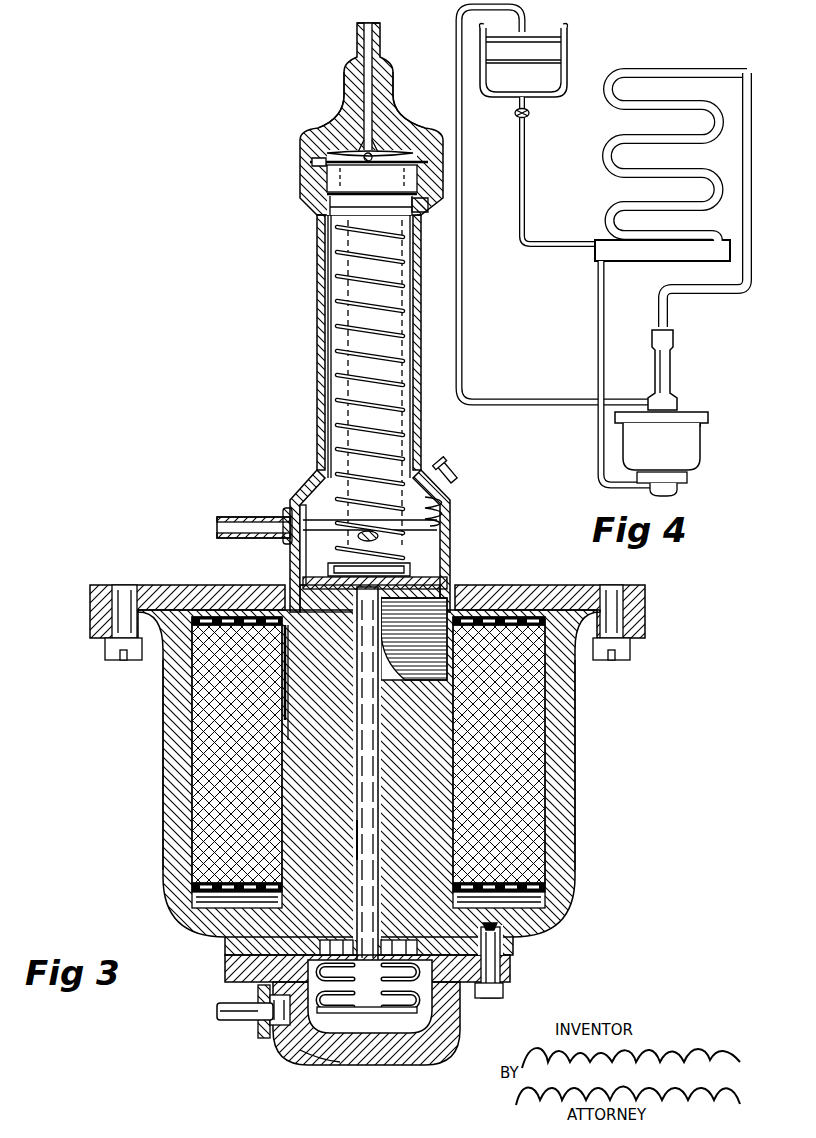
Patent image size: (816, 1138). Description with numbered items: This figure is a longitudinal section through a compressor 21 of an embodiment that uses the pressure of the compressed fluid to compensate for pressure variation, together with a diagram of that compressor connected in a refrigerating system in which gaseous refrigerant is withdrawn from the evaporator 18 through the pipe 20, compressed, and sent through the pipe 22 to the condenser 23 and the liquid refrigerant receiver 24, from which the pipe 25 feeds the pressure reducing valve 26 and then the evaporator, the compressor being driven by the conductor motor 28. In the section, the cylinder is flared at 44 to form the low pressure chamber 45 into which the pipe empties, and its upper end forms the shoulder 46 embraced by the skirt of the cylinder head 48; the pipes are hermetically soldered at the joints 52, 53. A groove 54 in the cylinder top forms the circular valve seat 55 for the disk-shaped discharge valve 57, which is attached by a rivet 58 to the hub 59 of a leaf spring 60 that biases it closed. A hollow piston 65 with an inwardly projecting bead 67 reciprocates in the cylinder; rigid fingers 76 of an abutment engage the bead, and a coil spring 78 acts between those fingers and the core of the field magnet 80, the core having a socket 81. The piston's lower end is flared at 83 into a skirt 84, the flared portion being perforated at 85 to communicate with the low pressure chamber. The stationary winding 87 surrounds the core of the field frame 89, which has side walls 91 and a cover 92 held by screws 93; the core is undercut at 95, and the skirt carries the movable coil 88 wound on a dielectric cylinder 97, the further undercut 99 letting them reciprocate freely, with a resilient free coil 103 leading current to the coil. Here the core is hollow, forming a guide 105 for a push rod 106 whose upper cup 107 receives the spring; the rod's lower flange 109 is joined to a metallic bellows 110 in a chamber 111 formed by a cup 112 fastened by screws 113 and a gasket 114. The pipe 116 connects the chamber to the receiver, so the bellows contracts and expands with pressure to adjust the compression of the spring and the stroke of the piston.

In FIG. 4, the evaporator 18 is at (567, 60).
In FIG. 3, the pipe 20 is at (217, 522).
In FIG. 4, the pipe 20 is at (462, 350).
In FIG. 3, the compressor 21 is at (318, 322).
In FIG. 4, the compressor 21 is at (722, 370).
In FIG. 3, the pipe 22 is at (381, 40).
In FIG. 4, the pipe 22 is at (705, 294).
In FIG. 4, the condenser 23 is at (603, 150).
In FIG. 4, the liquid refrigerant receiver 24 is at (652, 258).
In FIG. 4, the pipe 25 is at (524, 210).
In FIG. 4, the pressure reducing valve 26 is at (530, 113).
In FIG. 4, the conductor motor 28 is at (738, 478).
In FIG. 3, the flared portion of cylinder 44 is at (316, 470).
In FIG. 3, the low pressure chamber 45 is at (305, 205).
In FIG. 3, the shoulder 46 is at (322, 208).
In FIG. 3, the cylinder head 48 is at (430, 126).
In FIG. 3, the joint 52 is at (285, 512).
In FIG. 3, the joint 53 is at (390, 68).
In FIG. 3, the groove 54 is at (312, 163).
In FIG. 3, the valve seat 55 is at (330, 180).
In FIG. 3, the discharge valve 57 is at (315, 160).
In FIG. 3, the rivet 58 is at (372, 152).
In FIG. 3, the hub 59 is at (365, 150).
In FIG. 3, the leaf spring 60 is at (335, 153).
In FIG. 3, the piston 65 is at (325, 365).
In FIG. 3, the bead 67 is at (425, 205).
In FIG. 3, the fingers of abutment 76 is at (328, 240).
In FIG. 3, the coil spring 78 is at (320, 265).
In FIG. 3, the field magnet 80 is at (535, 735).
In FIG. 3, the socket 81 is at (326, 600).
In FIG. 3, the flared portion of piston 83 is at (292, 545).
In FIG. 3, the skirt 84 is at (450, 583).
In FIG. 3, the perforation 85 is at (442, 522).
In FIG. 3, the stationary winding 87 is at (575, 800).
In FIG. 3, the movable coil 88 is at (448, 645).
In FIG. 3, the field frame 89 is at (596, 939).
In FIG. 3, the side walls 91 is at (165, 745).
In FIG. 3, the cover 92 is at (645, 590).
In FIG. 3, the screws 93 is at (105, 650).
In FIG. 3, the undercut 95 is at (290, 720).
In FIG. 3, the dielectric cylinder 97 is at (420, 665).
In FIG. 3, the undercut 99 is at (290, 690).
In FIG. 3, the free coil 103 is at (447, 505).
In FIG. 3, the guide 105 is at (380, 760).
In FIG. 3, the push rod 106 is at (357, 838).
In FIG. 3, the cup 107 is at (412, 570).
In FIG. 3, the flange 109 is at (410, 1028).
In FIG. 3, the metallic bellows 110 is at (420, 990).
In FIG. 3, the chamber 111 is at (340, 1040).
In FIG. 3, the cup 112 is at (415, 1060).
In FIG. 4, the cup 112 is at (677, 487).
In FIG. 3, the screws 113 is at (503, 992).
In FIG. 3, the gasket 114 is at (228, 960).
In FIG. 3, the pipe 116 is at (230, 1012).
In FIG. 4, the pipe 116 is at (600, 330).